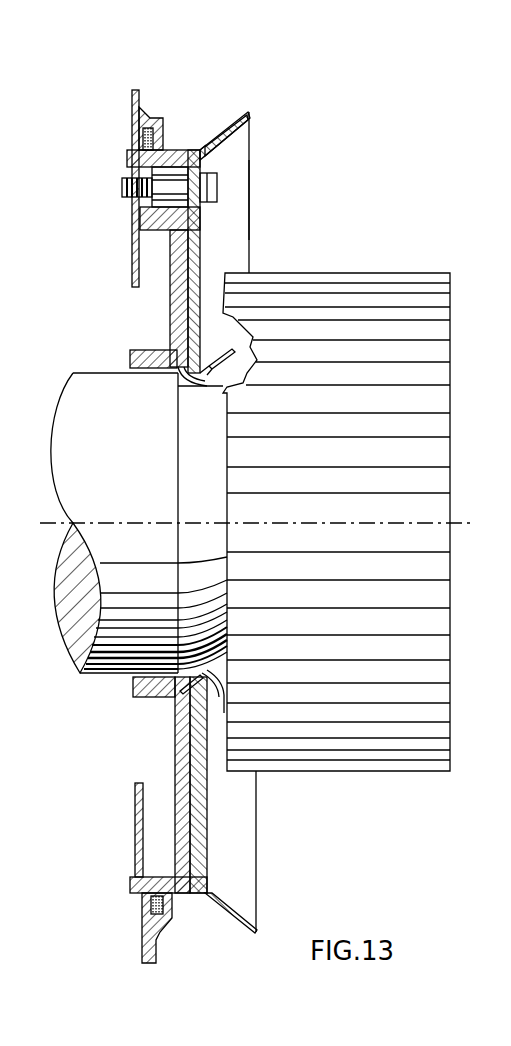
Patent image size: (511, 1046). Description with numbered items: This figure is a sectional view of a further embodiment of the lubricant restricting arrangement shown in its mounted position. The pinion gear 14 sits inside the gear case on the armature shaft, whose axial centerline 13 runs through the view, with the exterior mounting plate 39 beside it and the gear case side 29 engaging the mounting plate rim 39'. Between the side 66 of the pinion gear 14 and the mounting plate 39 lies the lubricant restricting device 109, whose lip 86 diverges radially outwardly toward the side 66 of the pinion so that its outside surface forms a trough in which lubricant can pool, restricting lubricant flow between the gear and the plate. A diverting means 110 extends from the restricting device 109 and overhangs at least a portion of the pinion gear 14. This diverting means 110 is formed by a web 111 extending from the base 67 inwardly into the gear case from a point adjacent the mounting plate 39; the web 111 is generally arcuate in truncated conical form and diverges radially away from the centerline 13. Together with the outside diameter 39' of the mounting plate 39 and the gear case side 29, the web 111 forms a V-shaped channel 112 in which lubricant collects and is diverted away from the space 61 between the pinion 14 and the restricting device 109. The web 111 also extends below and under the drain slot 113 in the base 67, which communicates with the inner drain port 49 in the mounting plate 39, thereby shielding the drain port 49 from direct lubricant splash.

The axial centerline 13 is at (350, 520).
The pinion gear 14 is at (431, 378).
The gear case side 29 is at (146, 98).
The mounting plate 39 is at (156, 261).
The mounting plate rim 39' is at (169, 167).
The inner drain port 49 is at (194, 872).
The space 61 is at (212, 305).
The side of the pinion gear 66 is at (231, 713).
The base 67 is at (200, 777).
The lip 86 is at (237, 378).
The lubricant restricting device 109 is at (258, 202).
The diverting means 110 is at (234, 115).
The web 111 is at (232, 160).
The V-shaped channel 112 is at (199, 100).
The drain slot 113 is at (209, 871).